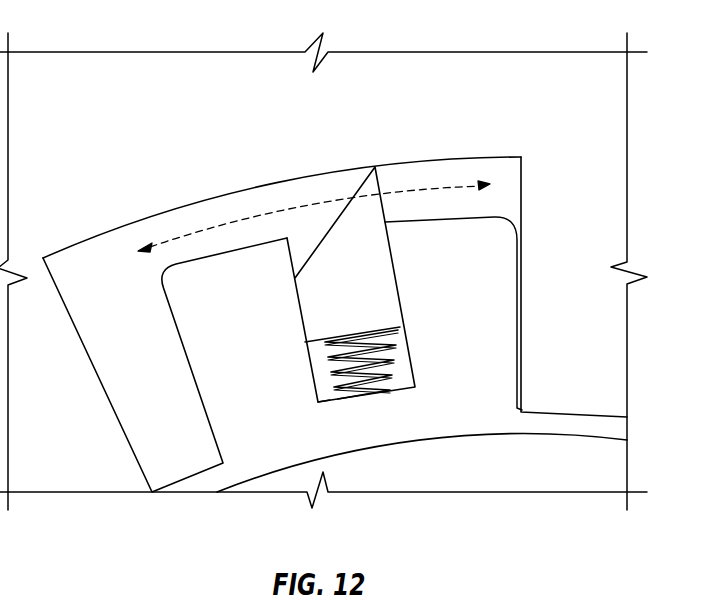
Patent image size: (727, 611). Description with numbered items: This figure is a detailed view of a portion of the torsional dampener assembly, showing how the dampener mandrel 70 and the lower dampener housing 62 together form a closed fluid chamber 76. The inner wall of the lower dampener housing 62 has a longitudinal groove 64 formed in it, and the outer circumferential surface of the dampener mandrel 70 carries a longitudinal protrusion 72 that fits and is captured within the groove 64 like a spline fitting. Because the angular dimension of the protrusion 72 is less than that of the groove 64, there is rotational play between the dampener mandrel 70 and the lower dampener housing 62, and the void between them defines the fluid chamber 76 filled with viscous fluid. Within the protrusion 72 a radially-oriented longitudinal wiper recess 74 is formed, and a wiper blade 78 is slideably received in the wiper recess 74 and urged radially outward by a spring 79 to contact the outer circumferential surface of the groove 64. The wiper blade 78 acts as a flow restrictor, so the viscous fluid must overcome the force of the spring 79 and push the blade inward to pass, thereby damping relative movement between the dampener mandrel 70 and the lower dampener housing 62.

The lower dampener housing 62 is at (233, 77).
The longitudinal grooves 64 is at (173, 210).
The dampener mandrel 70 is at (496, 478).
The longitudinal protrusions 72 is at (446, 213).
The wiper recess 74 is at (328, 400).
The fluid chamber 76 is at (98, 267).
The wiper blade 78 is at (399, 273).
The spring 79 is at (394, 362).